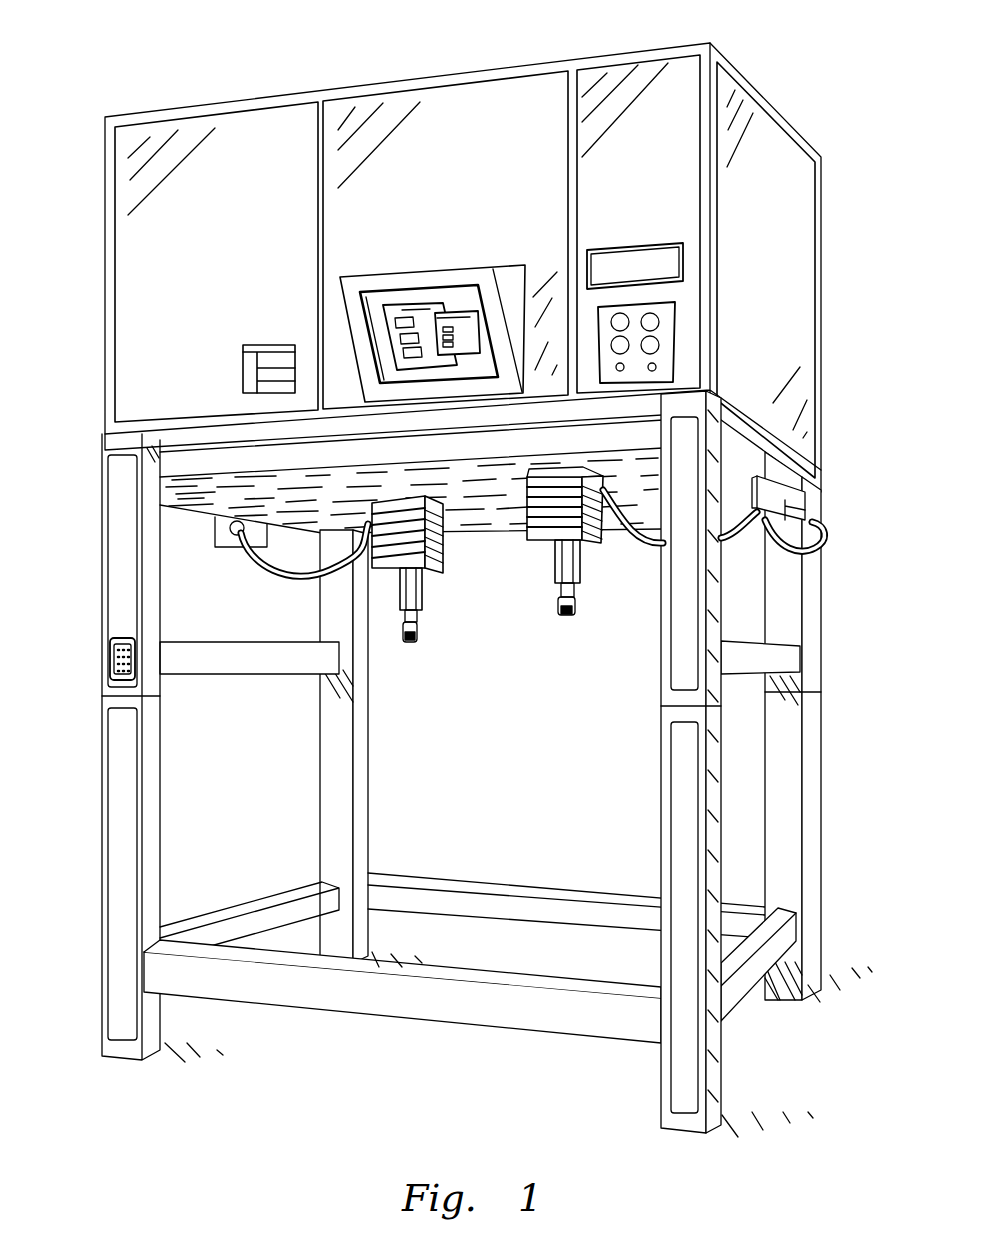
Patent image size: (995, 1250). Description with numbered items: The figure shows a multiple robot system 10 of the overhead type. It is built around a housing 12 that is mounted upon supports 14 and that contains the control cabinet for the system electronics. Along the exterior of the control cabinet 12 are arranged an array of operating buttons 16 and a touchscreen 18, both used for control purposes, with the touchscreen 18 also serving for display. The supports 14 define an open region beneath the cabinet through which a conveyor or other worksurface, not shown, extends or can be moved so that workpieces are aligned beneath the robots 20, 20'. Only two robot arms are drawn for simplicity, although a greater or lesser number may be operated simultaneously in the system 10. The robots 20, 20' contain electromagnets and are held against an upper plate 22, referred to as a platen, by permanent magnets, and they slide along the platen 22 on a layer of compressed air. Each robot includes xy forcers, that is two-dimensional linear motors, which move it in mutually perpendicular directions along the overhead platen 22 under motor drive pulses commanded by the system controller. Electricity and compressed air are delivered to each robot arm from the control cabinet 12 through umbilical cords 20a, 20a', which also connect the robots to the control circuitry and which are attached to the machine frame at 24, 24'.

The multiple robot system 10 is at (165, 34).
The housing 12 is at (125, 148).
The supports 14 is at (126, 1000).
The operating buttons 16 is at (677, 307).
The touchscreen 18 is at (418, 282).
The robot 20 is at (437, 569).
The robot 20' is at (546, 541).
The umbilical cord 20a is at (282, 565).
The umbilical cord 20a' is at (714, 545).
The upper plate 22 is at (634, 451).
The attachment point on machine frame 24 is at (218, 547).
The attachment point on machine frame 24' is at (821, 498).